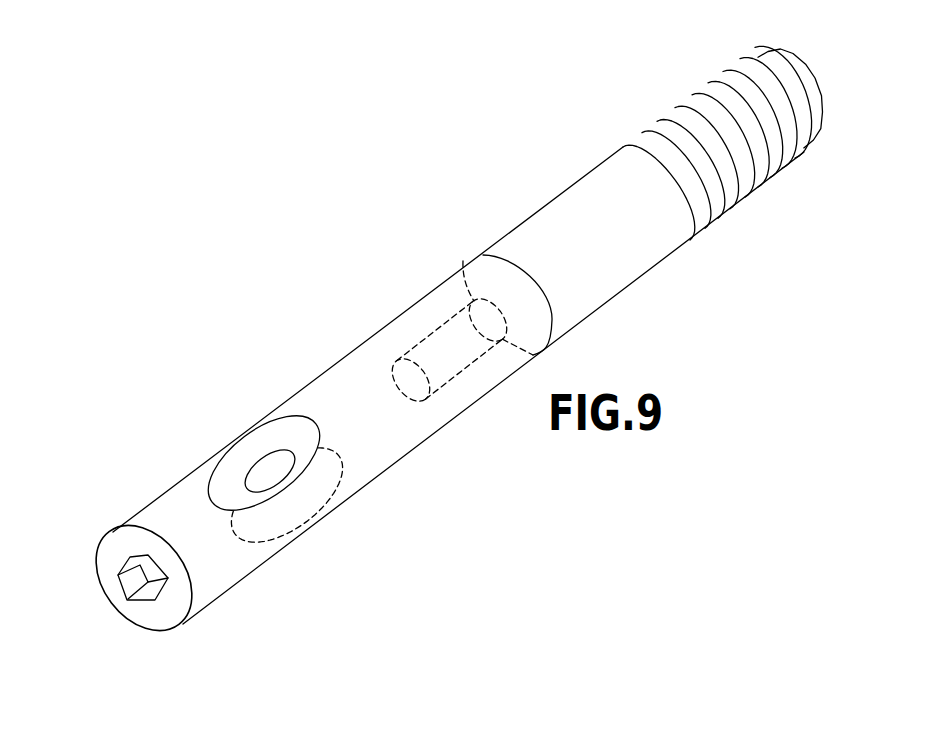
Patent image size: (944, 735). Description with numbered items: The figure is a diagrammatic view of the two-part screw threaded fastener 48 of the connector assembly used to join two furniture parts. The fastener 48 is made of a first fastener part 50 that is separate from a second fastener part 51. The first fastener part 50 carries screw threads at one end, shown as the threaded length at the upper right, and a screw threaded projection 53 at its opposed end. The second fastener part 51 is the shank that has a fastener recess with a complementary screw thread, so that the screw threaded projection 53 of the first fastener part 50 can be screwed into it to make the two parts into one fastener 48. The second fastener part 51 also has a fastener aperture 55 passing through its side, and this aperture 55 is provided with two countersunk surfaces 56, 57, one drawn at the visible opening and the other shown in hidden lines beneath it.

The two-part screw threaded fastener 48 is at (534, 203).
The first fastener part 50 is at (706, 112).
The second fastener part 51 is at (360, 370).
The screw threaded projection 53 is at (460, 328).
The fastener aperture 55 is at (270, 470).
The countersunk surface 56 is at (230, 480).
The countersunk surface 57 is at (255, 547).